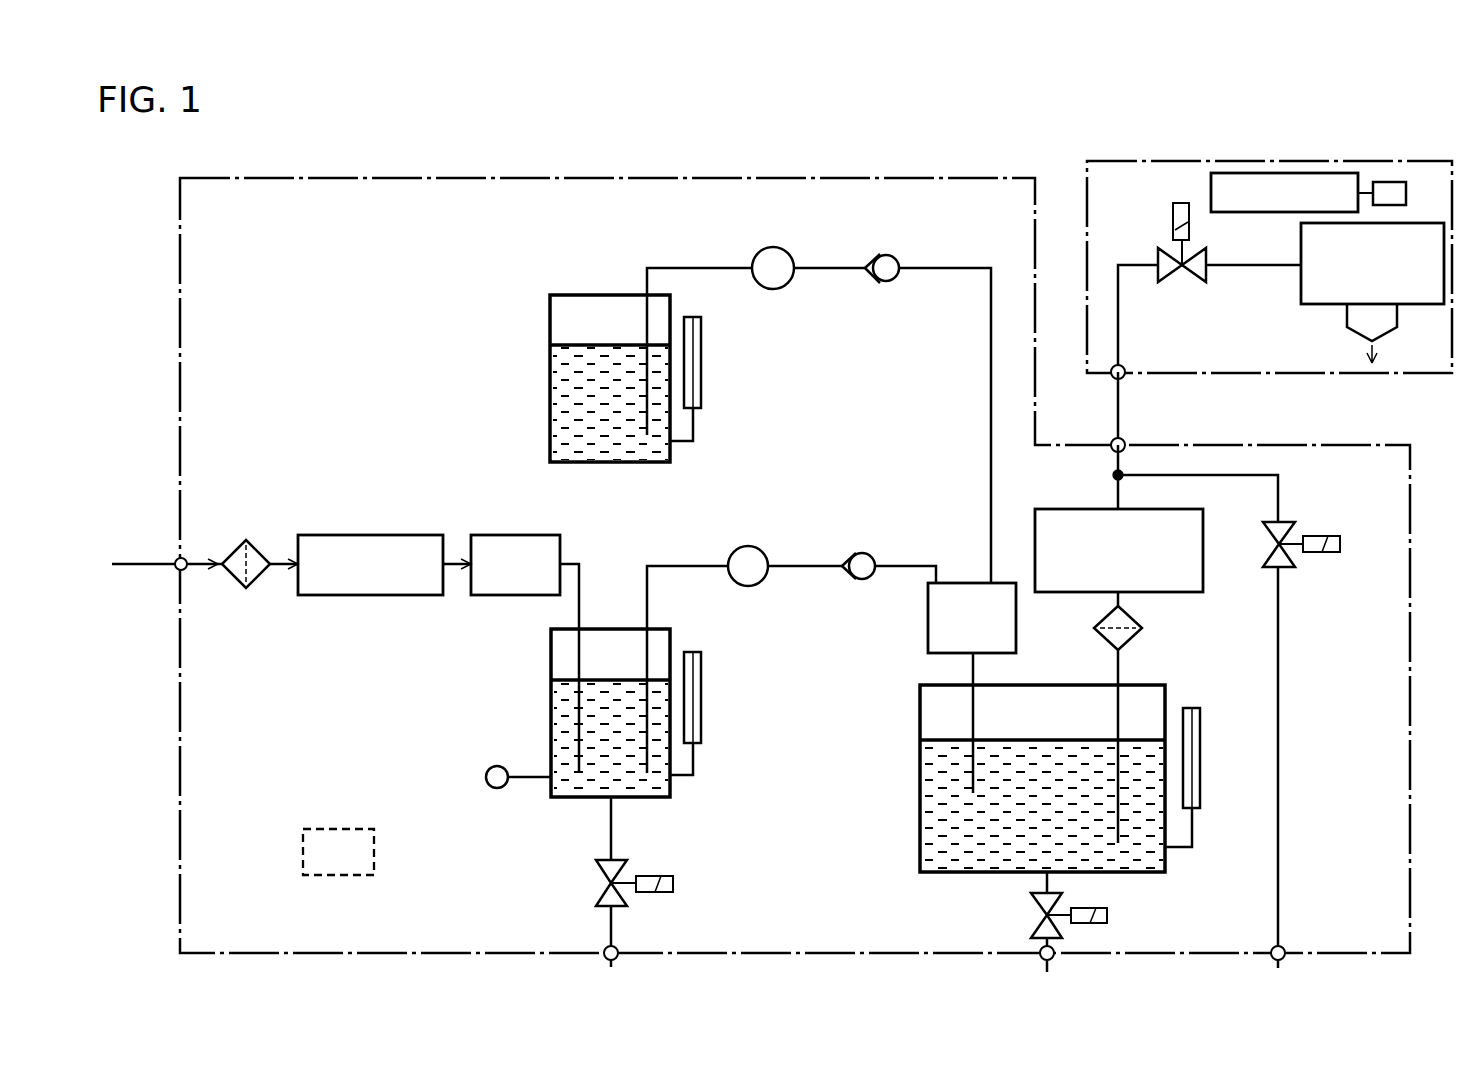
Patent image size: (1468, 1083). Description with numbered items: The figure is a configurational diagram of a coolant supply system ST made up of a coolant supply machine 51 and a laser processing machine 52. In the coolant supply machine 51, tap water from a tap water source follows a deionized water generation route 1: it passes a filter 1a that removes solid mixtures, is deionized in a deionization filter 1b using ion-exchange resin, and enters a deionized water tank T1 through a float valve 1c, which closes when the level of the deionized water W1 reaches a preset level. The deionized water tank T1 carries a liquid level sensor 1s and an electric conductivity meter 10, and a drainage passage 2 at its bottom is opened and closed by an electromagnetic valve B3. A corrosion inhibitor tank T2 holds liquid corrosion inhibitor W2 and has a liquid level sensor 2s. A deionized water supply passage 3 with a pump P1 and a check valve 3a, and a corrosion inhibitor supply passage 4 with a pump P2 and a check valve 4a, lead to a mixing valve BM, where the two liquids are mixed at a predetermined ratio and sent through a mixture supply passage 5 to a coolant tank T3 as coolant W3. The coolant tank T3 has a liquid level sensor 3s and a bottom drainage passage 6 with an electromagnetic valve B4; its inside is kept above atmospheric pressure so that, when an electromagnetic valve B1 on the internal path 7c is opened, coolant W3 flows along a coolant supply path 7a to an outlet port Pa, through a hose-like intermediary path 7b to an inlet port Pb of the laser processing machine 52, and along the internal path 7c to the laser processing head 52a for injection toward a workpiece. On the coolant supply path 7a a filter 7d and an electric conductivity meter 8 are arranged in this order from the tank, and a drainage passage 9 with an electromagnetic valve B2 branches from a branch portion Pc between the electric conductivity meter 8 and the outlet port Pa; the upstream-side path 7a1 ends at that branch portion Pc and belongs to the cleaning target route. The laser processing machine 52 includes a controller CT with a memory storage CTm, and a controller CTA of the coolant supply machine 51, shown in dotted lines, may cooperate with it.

The coolant supply machine 51 is at (708, 178).
The coolant supply system ST is at (1172, 130).
The controller CT is at (1288, 173).
The memory storage CTm is at (1387, 182).
The laser processing machine 52 is at (1430, 161).
The laser processing head 52a is at (1414, 305).
The electromagnetic valve B1 is at (1196, 282).
The internal path 7c is at (1135, 263).
The inlet port Pb is at (1110, 376).
The intermediary path 7b is at (1120, 400).
The outlet port Pa is at (1110, 444).
The branch portion Pc is at (1112, 475).
The coolant supply path 7a is at (1120, 495).
The electric conductivity meter 8 is at (1075, 594).
The filter 7d is at (1133, 618).
The upstream-side path 7a1 is at (1120, 665).
The drainage passage 9 is at (1280, 682).
The electromagnetic valve B2 is at (1298, 564).
The coolant tank T3 is at (920, 810).
The coolant W3 is at (945, 740).
The mixture supply passage 5 is at (975, 670).
The liquid level sensor 3s is at (1203, 746).
The drainage passage 6 is at (1052, 882).
The electromagnetic valve B4 is at (1036, 912).
The mixing valve BM is at (928, 630).
The deionized water supply passage 3 is at (808, 510).
The pump P1 is at (748, 566).
The check valve 3a is at (860, 553).
The corrosion inhibitor supply passage 4 is at (836, 305).
The pump P2 is at (773, 268).
The check valve 4a is at (890, 256).
The corrosion inhibitor tank T2 is at (550, 358).
The corrosion inhibitor W2 is at (571, 345).
The liquid level sensor 2s is at (703, 355).
The deionized water generation route 1 is at (397, 490).
The filter 1a is at (250, 540).
The deionization filter 1b is at (357, 535).
The float valve 1c is at (505, 535).
The deionized water tank T1 is at (551, 705).
The deionized water W1 is at (560, 680).
The liquid level sensor 1s is at (703, 702).
The electric conductivity meter 10 is at (486, 777).
The controller CTA is at (336, 829).
The drainage passage 2 is at (617, 828).
The electromagnetic valve B3 is at (600, 880).